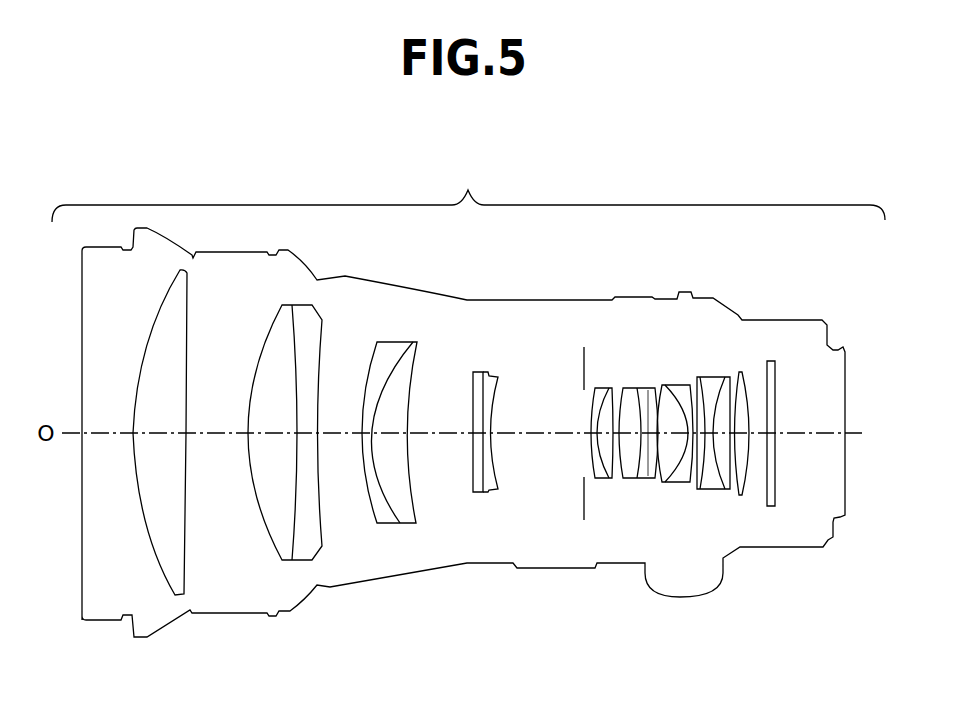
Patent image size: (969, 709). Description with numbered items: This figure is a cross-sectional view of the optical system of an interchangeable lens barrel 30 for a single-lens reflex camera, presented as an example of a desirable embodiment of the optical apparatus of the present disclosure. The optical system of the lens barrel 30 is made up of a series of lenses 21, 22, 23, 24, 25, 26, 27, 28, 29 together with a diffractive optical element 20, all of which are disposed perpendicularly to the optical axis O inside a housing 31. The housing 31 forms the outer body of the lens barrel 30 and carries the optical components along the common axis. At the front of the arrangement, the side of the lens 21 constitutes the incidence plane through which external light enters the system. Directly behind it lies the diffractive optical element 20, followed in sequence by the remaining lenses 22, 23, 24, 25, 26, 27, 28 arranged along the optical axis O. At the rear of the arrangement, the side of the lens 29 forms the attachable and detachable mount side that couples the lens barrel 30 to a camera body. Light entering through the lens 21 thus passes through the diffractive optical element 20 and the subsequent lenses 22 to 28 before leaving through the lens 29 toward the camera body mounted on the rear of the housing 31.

The diffractive optical element 20 is at (285, 543).
The lens 21 is at (172, 577).
The lens 22 is at (388, 517).
The lens 23 is at (483, 490).
The lens 24 is at (600, 477).
The lens 25 is at (647, 473).
The lens 26 is at (690, 475).
The lens 27 is at (717, 487).
The lens 28 is at (745, 455).
The lens 29 is at (770, 465).
The lens barrel 30 is at (468, 191).
The housing 31 is at (798, 332).